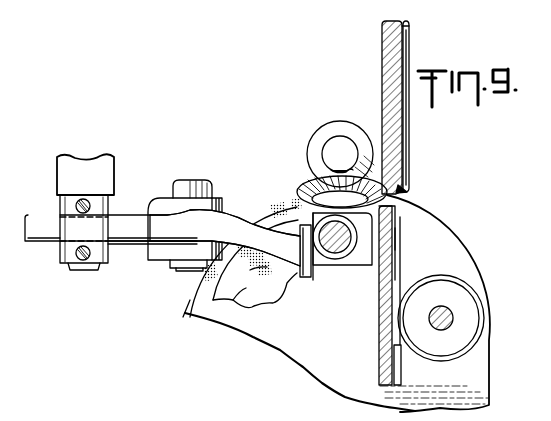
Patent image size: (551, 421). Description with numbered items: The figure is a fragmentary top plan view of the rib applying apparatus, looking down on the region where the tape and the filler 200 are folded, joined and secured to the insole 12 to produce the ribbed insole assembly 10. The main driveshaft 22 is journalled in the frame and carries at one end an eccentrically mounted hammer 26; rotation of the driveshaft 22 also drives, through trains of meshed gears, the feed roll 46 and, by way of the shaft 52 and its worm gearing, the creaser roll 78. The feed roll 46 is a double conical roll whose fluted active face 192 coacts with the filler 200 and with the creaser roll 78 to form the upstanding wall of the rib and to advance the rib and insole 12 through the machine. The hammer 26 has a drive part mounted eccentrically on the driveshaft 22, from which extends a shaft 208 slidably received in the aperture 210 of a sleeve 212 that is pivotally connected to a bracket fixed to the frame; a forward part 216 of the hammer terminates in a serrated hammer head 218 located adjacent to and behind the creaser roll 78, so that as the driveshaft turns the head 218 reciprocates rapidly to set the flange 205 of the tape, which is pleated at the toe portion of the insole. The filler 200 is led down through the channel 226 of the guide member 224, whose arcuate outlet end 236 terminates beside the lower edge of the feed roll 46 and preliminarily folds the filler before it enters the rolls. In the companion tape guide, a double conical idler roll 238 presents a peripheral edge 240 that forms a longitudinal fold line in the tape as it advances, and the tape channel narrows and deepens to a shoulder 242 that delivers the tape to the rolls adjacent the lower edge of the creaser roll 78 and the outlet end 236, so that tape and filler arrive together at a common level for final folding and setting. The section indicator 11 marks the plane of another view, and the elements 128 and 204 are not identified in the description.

The ribbed insole assembly 10 is at (309, 372).
The section line 11- 11 is at (370, 88).
The insole 12 is at (351, 359).
The main driveshaft 22 is at (184, 190).
The hammer 26 is at (132, 208).
The feed roll 46 is at (313, 149).
The shaft 52 is at (361, 291).
The creaser roll 78 is at (324, 279).
The ball 128 is at (330, 131).
The active face 192 is at (311, 206).
The filler strip 200 is at (405, 62).
The guide rail segment 204 is at (398, 218).
The flange 205 is at (247, 308).
The shaft 208 is at (46, 241).
The aperture 210 is at (64, 263).
The sleeve 212 is at (108, 267).
The forward part 216 is at (229, 216).
The hammer head 218 is at (296, 224).
The guide member 224 is at (383, 42).
The channel 226 is at (410, 33).
The outlet end 236 is at (397, 190).
The double conical idler roll 238 is at (478, 312).
The peripheral edge 240 is at (478, 346).
The shoulder 242 is at (397, 239).